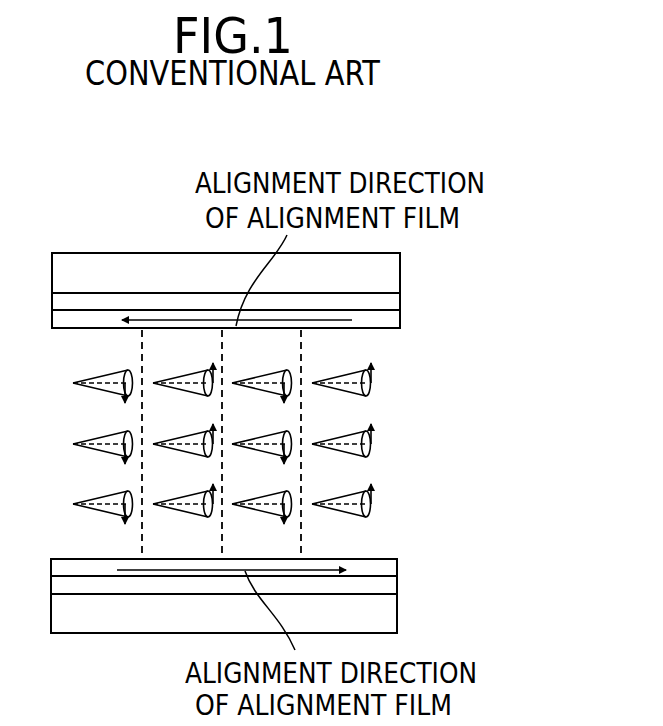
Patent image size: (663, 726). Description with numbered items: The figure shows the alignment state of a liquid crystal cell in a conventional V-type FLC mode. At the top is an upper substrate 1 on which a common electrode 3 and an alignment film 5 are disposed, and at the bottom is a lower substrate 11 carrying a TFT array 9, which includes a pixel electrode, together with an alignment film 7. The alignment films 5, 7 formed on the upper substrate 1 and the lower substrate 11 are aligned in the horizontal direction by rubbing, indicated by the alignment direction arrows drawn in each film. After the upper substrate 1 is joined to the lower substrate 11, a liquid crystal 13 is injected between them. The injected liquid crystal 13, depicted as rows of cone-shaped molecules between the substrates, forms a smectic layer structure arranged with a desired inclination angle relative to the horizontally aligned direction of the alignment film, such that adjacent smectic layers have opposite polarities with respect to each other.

The upper substrate 1 is at (400, 265).
The common electrode 3 is at (400, 302).
The alignment film 5 is at (400, 325).
The alignment film 7 is at (397, 568).
The TFT array 9 is at (397, 590).
The lower substrate 11 is at (397, 620).
The liquid crystal 13 is at (92, 503).